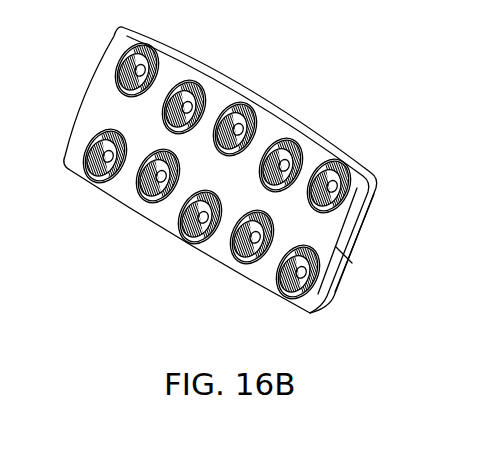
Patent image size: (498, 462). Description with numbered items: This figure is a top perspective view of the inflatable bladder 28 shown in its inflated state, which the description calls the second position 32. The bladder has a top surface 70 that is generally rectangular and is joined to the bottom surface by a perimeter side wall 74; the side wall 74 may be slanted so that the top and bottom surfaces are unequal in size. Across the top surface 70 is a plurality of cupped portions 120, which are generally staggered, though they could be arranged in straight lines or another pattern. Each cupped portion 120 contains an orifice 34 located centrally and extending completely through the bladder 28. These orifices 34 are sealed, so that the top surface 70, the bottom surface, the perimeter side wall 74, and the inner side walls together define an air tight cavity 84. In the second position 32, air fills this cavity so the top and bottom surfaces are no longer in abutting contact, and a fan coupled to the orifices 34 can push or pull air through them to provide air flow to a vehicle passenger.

The inflatable bladder 28 is at (330, 95).
The second position 32 is at (285, 83).
The orifices 34 is at (237, 130).
The top surface 70 is at (350, 222).
The perimeter side wall 74 is at (362, 237).
The air tight cavity 84 is at (354, 263).
The cupped portions 120 is at (149, 56).